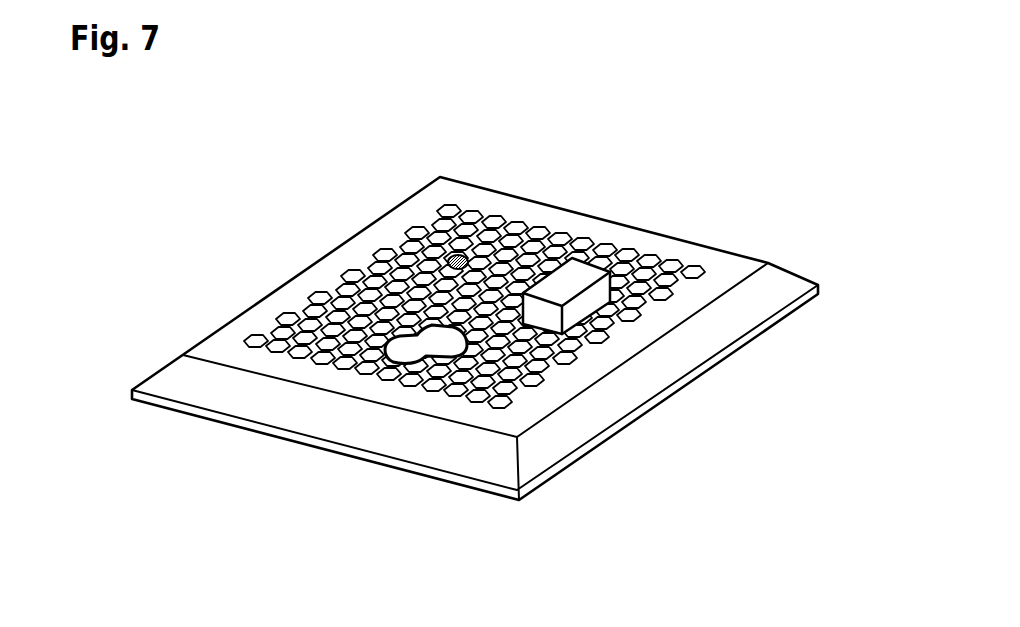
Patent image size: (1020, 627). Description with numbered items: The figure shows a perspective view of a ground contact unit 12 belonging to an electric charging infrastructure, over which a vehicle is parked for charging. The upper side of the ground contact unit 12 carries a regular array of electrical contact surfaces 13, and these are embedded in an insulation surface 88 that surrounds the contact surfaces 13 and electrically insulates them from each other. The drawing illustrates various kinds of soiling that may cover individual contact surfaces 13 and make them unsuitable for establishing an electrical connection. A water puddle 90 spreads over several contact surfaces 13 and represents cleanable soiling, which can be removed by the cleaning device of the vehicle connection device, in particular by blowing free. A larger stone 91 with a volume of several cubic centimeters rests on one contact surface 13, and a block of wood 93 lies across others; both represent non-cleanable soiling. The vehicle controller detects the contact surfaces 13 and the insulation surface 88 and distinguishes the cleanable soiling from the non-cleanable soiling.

The ground contact unit 12 is at (233, 279).
The contact surfaces 13 is at (351, 274).
The insulation surface 88 is at (687, 258).
The water puddle 90 is at (433, 340).
The stone 91 is at (459, 256).
The block of wood 93 is at (587, 273).